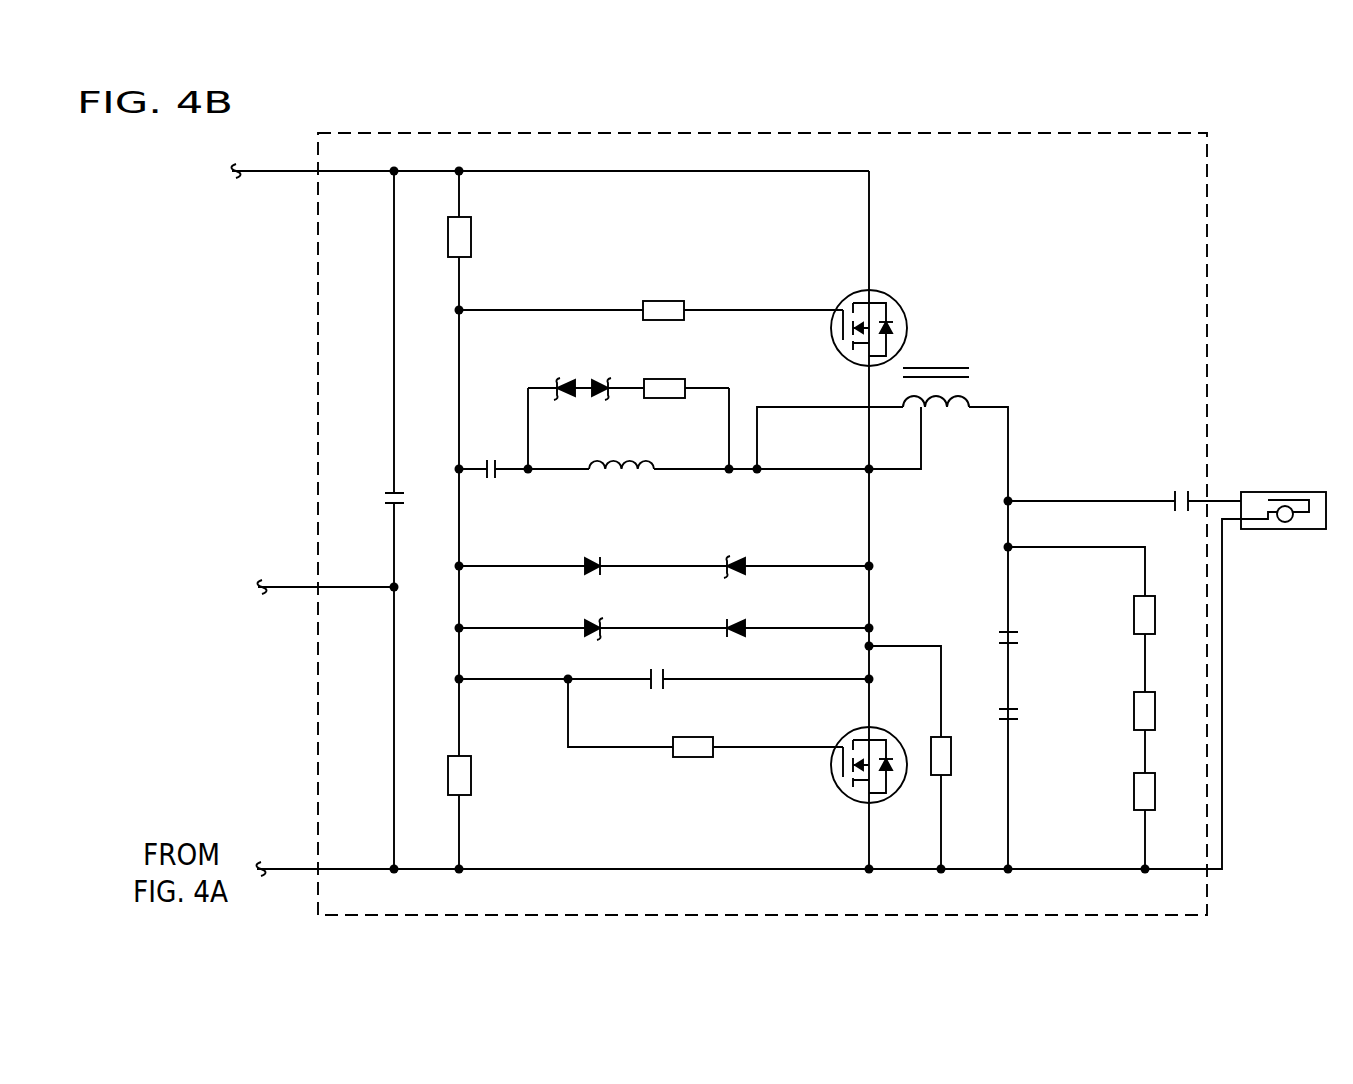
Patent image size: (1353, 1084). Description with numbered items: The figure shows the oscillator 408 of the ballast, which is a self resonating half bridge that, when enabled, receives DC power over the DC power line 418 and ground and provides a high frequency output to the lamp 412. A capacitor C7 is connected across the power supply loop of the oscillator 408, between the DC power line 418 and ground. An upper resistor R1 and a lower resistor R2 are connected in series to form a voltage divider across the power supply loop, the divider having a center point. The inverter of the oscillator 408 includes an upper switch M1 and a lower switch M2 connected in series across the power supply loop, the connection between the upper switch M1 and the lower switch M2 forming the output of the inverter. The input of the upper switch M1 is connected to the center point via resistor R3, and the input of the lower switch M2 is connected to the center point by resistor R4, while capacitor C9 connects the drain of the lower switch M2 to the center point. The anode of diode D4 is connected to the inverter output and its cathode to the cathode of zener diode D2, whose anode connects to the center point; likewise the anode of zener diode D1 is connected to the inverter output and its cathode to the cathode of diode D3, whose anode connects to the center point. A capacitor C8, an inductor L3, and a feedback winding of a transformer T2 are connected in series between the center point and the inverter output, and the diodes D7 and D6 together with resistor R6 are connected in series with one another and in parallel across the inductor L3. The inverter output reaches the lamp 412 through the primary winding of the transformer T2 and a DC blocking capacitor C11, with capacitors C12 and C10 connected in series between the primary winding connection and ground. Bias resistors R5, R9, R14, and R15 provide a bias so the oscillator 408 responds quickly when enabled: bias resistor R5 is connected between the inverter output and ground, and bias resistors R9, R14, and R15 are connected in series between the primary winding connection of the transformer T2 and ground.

The oscillator 408 is at (1207, 218).
The lamp 412 is at (1283, 530).
The DC power line 418 is at (256, 180).
The upper resistor R1 is at (480, 237).
The lower resistor R2 is at (480, 776).
The resistor R3 is at (651, 292).
The resistor R4 is at (705, 739).
The bias resistor R5 is at (929, 757).
The resistor R6 is at (686, 376).
The bias resistor R9 is at (1081, 619).
The bias resistor R14 is at (1116, 732).
The bias resistor R15 is at (1116, 821).
The capacitor C7 is at (378, 478).
The capacitor C8 is at (493, 453).
The capacitor C9 is at (664, 666).
The capacitor C10 is at (986, 697).
The DC blocking capacitor C11 is at (1124, 482).
The capacitor C12 is at (986, 620).
The zener diode D1 is at (764, 554).
The zener diode D2 is at (559, 617).
The diode D3 is at (559, 553).
The diode D4 is at (764, 615).
The diode D6 is at (617, 369).
The diode D7 is at (554, 377).
The inductor L3 is at (698, 448).
The transformer T2 is at (882, 600).
The upper switch M1 is at (874, 304).
The lower switch M2 is at (857, 750).